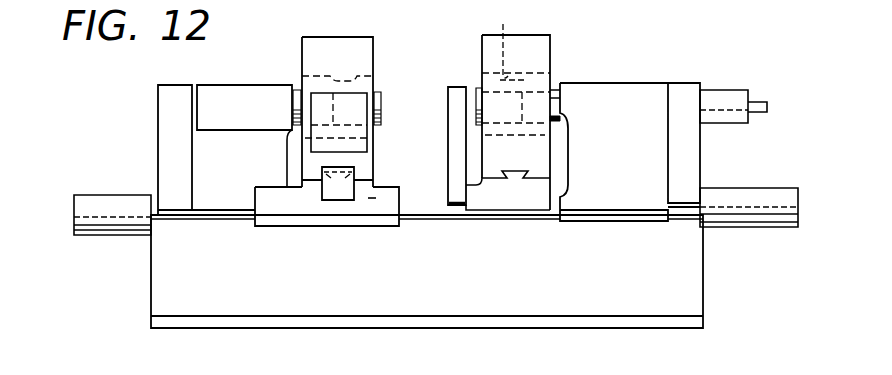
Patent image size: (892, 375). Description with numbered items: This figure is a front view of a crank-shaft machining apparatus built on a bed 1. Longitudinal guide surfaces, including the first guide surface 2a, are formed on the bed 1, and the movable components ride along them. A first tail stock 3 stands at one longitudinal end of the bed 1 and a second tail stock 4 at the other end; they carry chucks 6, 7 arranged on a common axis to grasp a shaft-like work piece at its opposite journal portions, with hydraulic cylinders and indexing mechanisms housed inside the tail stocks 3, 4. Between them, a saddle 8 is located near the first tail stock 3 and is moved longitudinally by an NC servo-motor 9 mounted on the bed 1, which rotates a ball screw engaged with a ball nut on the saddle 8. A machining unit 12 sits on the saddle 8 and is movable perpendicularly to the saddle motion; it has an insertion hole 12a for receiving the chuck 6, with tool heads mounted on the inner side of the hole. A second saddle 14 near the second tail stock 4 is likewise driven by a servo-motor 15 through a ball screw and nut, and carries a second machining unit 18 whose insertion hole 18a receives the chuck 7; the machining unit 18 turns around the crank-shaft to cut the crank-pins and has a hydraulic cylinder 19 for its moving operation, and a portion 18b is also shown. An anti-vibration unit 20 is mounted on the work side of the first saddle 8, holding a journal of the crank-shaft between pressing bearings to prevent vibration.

The bed 1 is at (602, 300).
The first guide surface 2a is at (428, 216).
The first tail stock 3 is at (617, 88).
The second tail stock 4 is at (225, 205).
The chuck 6 is at (555, 92).
The chuck 7 is at (382, 110).
The saddle 8 is at (514, 200).
The NC servo-motor 9 is at (738, 192).
The machining unit 12 is at (533, 41).
The insertion hole 12a is at (506, 41).
The second saddle 14 is at (298, 210).
The servo-motor 15 is at (105, 205).
The second machining unit 18 is at (358, 47).
The insertion hole 18a is at (350, 77).
The arm 18b is at (225, 97).
The hydraulic cylinder 19 is at (343, 200).
The anti-vibration unit 20 is at (452, 88).